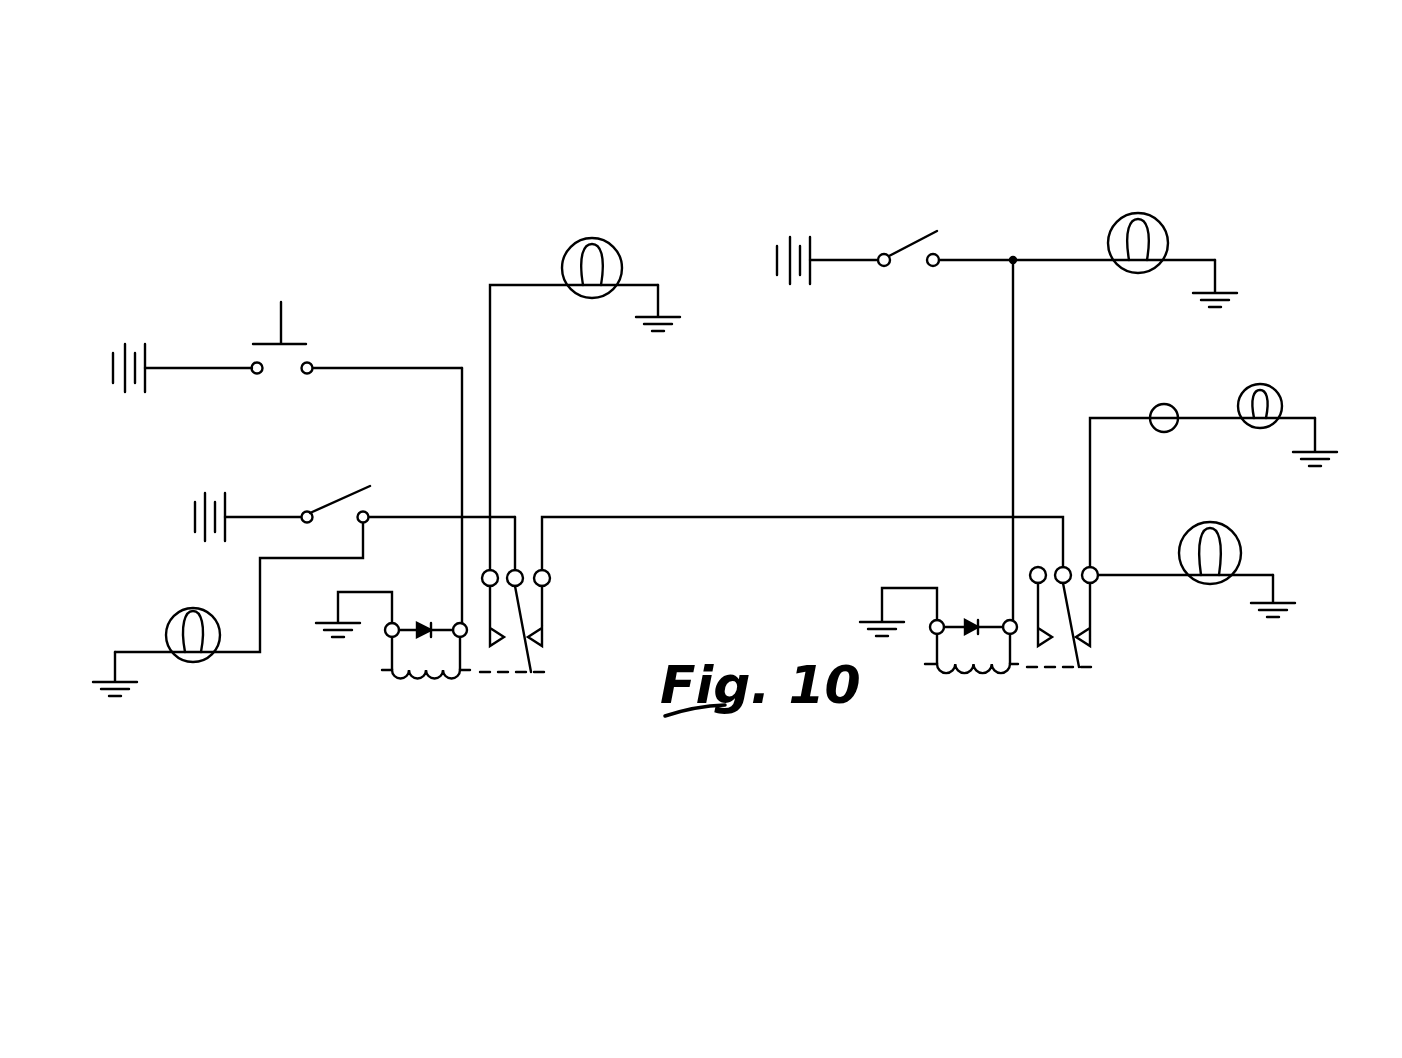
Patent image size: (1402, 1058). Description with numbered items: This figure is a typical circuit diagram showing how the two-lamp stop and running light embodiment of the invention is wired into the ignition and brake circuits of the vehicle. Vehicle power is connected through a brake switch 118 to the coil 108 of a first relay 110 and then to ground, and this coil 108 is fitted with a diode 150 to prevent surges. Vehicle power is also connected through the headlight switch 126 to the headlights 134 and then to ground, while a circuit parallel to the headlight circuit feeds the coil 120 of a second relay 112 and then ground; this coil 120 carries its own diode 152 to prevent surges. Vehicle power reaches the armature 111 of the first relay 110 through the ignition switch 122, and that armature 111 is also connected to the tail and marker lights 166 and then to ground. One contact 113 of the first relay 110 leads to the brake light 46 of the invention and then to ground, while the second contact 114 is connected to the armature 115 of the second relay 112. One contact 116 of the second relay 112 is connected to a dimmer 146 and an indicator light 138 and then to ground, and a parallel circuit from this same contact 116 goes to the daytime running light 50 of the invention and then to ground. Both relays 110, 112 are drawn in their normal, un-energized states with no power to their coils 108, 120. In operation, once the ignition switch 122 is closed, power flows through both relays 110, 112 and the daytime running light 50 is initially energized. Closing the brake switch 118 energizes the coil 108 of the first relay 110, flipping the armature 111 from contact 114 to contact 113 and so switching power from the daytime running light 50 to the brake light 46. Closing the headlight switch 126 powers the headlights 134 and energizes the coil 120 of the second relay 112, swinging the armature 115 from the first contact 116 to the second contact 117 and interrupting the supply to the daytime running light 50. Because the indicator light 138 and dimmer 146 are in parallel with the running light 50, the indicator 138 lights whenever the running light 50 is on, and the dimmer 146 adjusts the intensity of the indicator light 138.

The brake light 46 is at (611, 238).
The daytime running light 50 is at (1228, 522).
The coil 108 is at (400, 690).
The first relay 110 is at (446, 669).
The armature 111 is at (533, 678).
The second relay 112 is at (999, 657).
The contact 113 is at (512, 684).
The second contact 114 is at (541, 632).
The armature 115 is at (1090, 676).
The contact 116 is at (1097, 610).
The second contact 117 is at (1043, 648).
The brake switch 118 is at (297, 321).
The coil 120 is at (958, 682).
The ignition switch 122 is at (343, 490).
The headlight switch 126 is at (906, 235).
The headlights 134 is at (1120, 220).
The indicator light 138 is at (1281, 396).
The dimmer 146 is at (1165, 402).
The diode 150 is at (440, 612).
The diode 152 is at (980, 608).
The tail and marker lights 166 is at (205, 600).